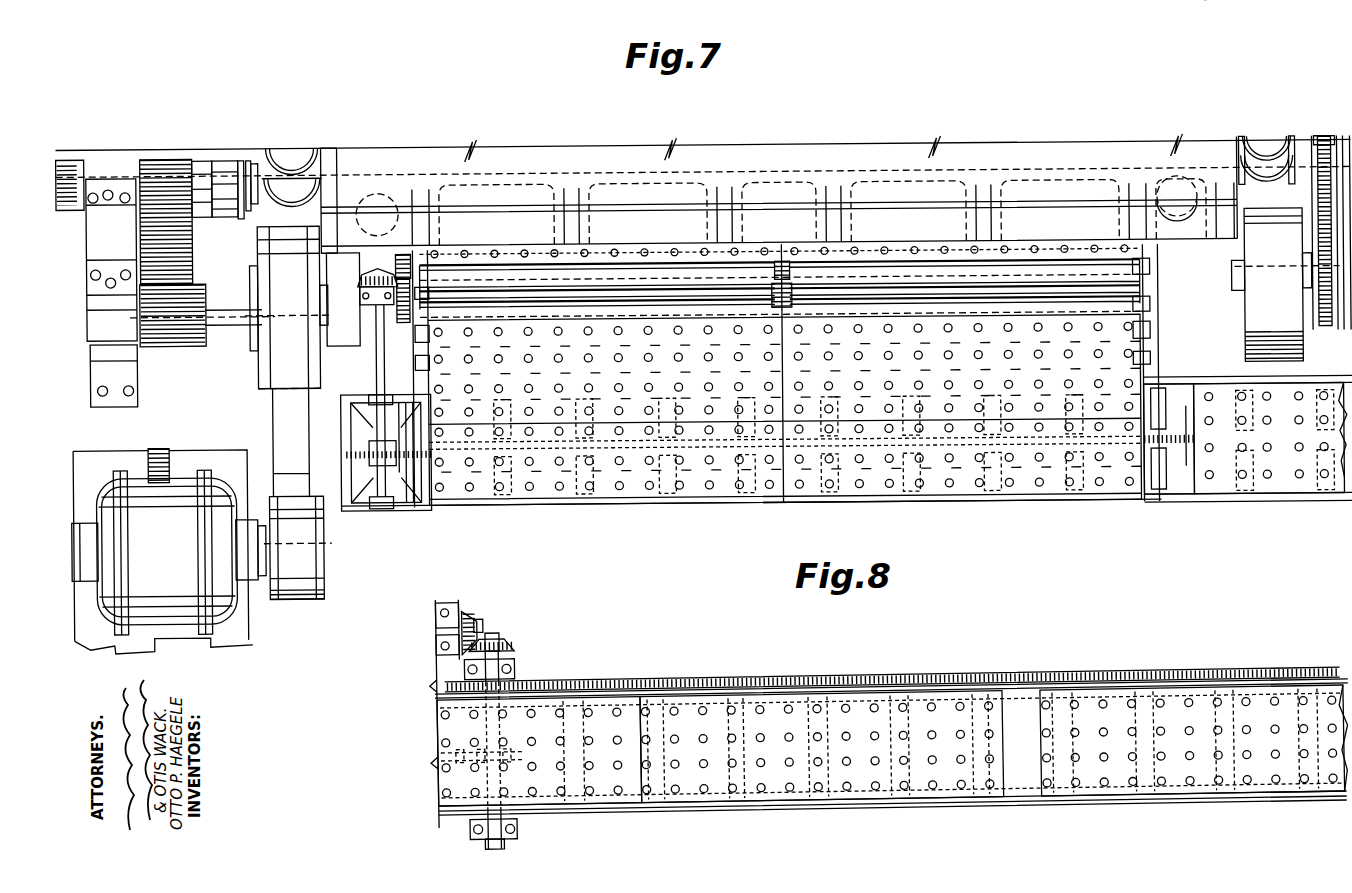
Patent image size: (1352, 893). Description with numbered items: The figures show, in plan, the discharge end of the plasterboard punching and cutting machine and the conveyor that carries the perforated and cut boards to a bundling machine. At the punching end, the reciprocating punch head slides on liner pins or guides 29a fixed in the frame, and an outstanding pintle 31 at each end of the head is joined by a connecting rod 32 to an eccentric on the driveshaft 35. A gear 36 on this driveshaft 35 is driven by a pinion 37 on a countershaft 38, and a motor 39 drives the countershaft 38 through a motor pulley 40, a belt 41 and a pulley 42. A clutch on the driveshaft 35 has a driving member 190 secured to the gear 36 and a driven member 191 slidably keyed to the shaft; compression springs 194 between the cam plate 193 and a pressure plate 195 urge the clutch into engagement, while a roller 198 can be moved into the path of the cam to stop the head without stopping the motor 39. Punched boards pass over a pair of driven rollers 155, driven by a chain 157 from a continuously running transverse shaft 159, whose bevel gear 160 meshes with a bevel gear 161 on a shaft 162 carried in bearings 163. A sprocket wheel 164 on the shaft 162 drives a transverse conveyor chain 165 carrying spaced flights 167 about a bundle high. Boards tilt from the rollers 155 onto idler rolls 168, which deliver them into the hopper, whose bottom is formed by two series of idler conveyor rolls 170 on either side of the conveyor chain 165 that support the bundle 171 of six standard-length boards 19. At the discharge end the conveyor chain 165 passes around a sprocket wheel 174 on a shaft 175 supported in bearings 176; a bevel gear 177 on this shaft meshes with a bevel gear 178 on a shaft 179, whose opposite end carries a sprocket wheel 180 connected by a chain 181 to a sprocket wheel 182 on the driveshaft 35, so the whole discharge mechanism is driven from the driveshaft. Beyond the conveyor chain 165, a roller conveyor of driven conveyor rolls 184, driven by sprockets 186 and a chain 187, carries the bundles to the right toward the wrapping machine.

In FIG. 8, the standard-length board 19 is at (616, 704).
In FIG. 7, the liner pin 29a is at (1211, 205).
In FIG. 7, the pintle 31 is at (1089, 140).
In FIG. 7, the connecting rod 32 is at (1262, 145).
In FIG. 7, the driveshaft 35 is at (263, 210).
In FIG. 7, the gear 36 is at (181, 242).
In FIG. 7, the pinion 37 is at (172, 343).
In FIG. 7, the countershaft 38 is at (232, 322).
In FIG. 7, the motor 39 is at (178, 500).
In FIG. 7, the motor pulley 40 is at (322, 575).
In FIG. 7, the belt 41 is at (285, 428).
In FIG. 7, the pulley 42 is at (1245, 333).
In FIG. 7, the driven rollers 155 is at (606, 300).
In FIG. 7, the chain 157 is at (403, 321).
In FIG. 7, the transverse shaft 159 is at (402, 252).
In FIG. 7, the bevel gear 160 is at (382, 265).
In FIG. 7, the bevel gear 161 is at (366, 283).
In FIG. 7, the shaft 162 is at (380, 330).
In FIG. 7, the bearings 163 is at (378, 506).
In FIG. 7, the sprocket wheel 164 is at (363, 413).
In FIG. 7, the conveyor chain 165 is at (399, 472).
In FIG. 7, the flights 167 is at (1190, 462).
In FIG. 7, the idler rolls 168 is at (1150, 331).
In FIG. 7, the idler conveyor rolls 170 is at (585, 500).
In FIG. 7, the bundle 171 is at (1026, 500).
In FIG. 8, the sprocket wheel 174 is at (487, 778).
In FIG. 8, the shaft 175 is at (437, 817).
In FIG. 8, the bearings 176 is at (514, 665).
In FIG. 8, the bevel gear 177 is at (508, 643).
In FIG. 8, the bevel gear 178 is at (468, 614).
In FIG. 7, the shaft 179 is at (1246, 251).
In FIG. 8, the shaft 179 is at (485, 627).
In FIG. 7, the sprocket wheel 180 is at (1250, 356).
In FIG. 7, the chain 181 is at (1316, 200).
In FIG. 7, the sprocket wheel 182 is at (1322, 141).
In FIG. 8, the driven conveyor rolls 184 is at (838, 780).
In FIG. 8, the sprockets 186 is at (810, 699).
In FIG. 8, the chain 187 is at (755, 690).
In FIG. 7, the driving member 190 is at (196, 162).
In FIG. 7, the driven member 191 is at (228, 200).
In FIG. 7, the cam plate 193 is at (243, 158).
In FIG. 7, the compression springs 194 is at (250, 158).
In FIG. 7, the pressure plate 195 is at (258, 160).
In FIG. 7, the roller 198 is at (221, 165).